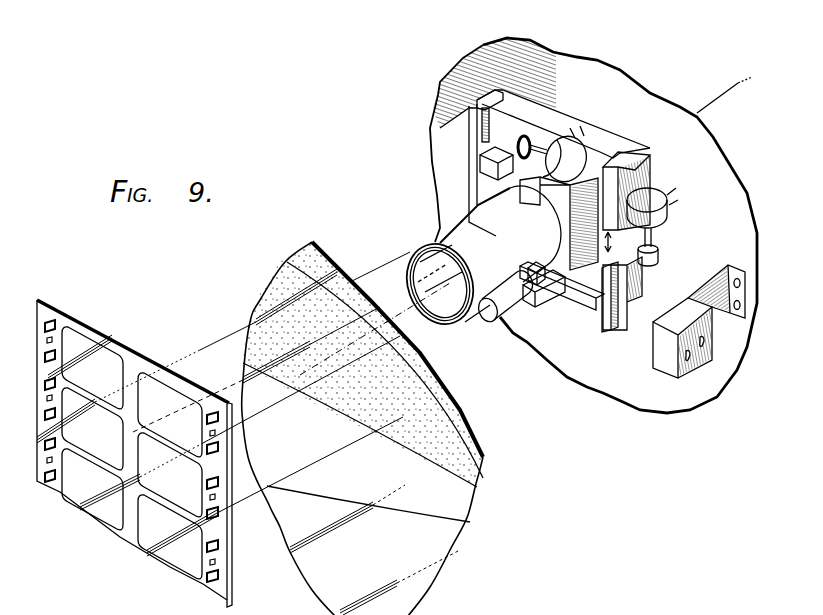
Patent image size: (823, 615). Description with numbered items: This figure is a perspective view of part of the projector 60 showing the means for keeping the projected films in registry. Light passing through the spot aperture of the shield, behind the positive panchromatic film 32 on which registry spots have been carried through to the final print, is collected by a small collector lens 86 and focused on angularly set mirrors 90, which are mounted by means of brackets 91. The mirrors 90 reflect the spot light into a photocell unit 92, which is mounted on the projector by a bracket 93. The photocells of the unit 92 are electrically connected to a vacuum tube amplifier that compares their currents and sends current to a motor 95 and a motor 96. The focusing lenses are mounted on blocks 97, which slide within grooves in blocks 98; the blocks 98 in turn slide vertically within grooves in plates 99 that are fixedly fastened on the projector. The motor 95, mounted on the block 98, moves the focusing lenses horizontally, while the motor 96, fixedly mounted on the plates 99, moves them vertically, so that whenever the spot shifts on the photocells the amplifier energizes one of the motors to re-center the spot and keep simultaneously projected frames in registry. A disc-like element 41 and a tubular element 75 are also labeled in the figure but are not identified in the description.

The positive panchromatic film 32 is at (62, 305).
The disc 41 is at (324, 238).
The projector 60 is at (737, 167).
The lens tube 75 is at (443, 235).
The small collector lens 86 is at (510, 303).
The angularly set mirrors 90 is at (538, 263).
The brackets 91 is at (585, 293).
The photocell unit 92 is at (672, 365).
The bracket 93 is at (712, 273).
The motor 95 is at (583, 153).
The motor 96 is at (667, 200).
The blocks 97 is at (478, 193).
The blocks 98 is at (547, 103).
The plates 99 is at (510, 88).